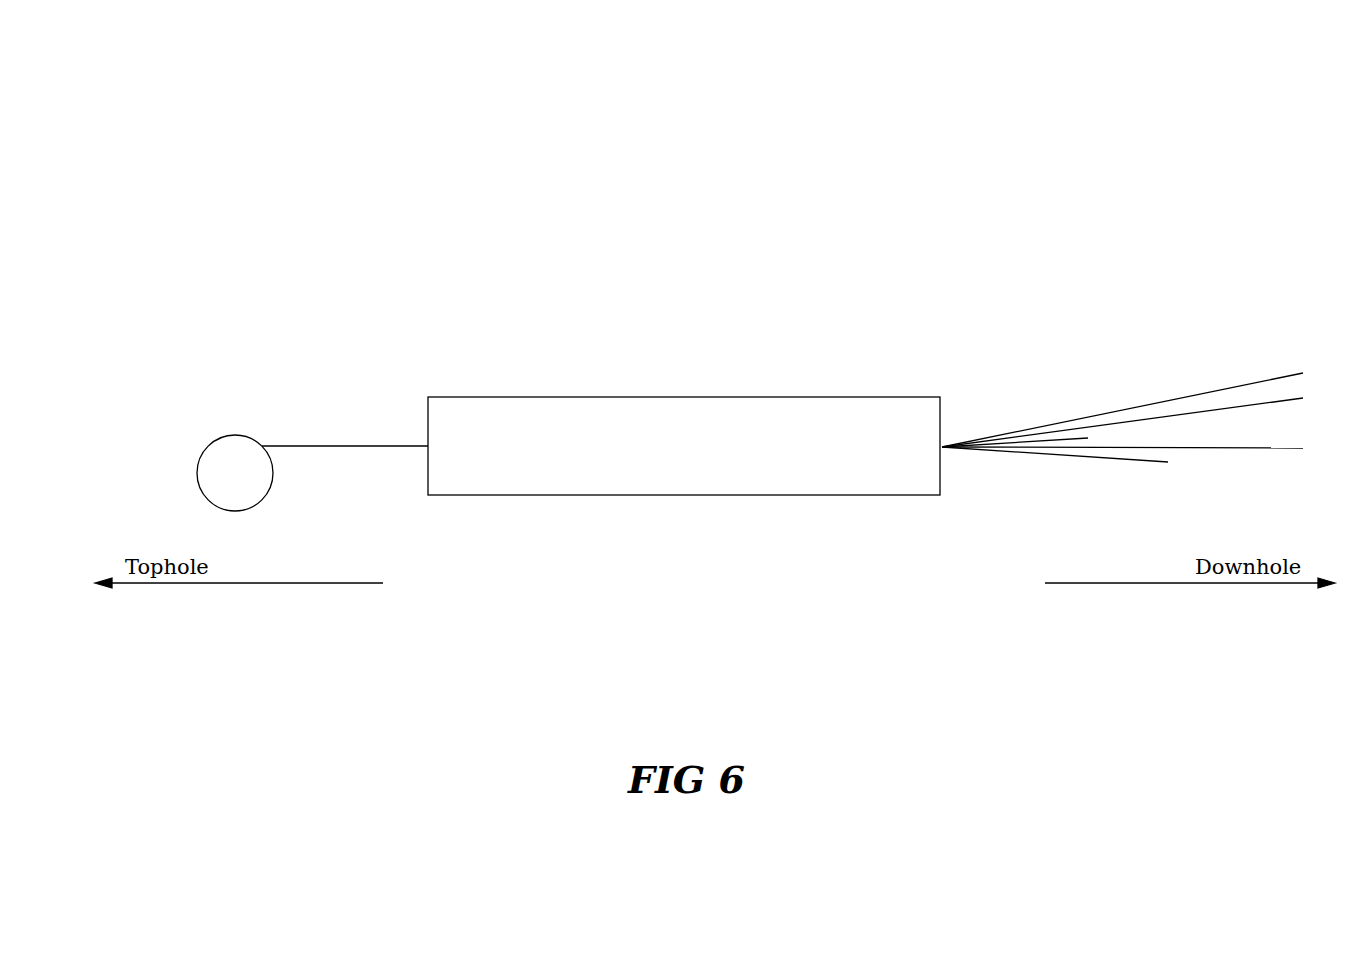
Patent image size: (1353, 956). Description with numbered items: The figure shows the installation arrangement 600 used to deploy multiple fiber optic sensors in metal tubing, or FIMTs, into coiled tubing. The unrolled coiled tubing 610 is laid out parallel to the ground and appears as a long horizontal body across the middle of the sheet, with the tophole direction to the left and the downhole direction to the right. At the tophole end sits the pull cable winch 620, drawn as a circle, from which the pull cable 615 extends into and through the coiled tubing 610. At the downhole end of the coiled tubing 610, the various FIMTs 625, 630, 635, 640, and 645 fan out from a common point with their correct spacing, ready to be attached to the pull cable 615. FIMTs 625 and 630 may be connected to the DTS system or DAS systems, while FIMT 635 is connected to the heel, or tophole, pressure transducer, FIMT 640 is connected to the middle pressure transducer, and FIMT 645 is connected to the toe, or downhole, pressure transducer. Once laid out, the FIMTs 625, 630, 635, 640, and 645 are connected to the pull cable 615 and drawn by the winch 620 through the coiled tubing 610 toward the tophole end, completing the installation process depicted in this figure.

The downhole tool system 600 is at (200, 155).
The unrolled coiled tubing 610 is at (596, 397).
The pull cable 615 is at (355, 443).
The pull cable winch 620 is at (223, 435).
The FIMT 625 is at (1253, 383).
The FIMT 630 is at (1178, 413).
The FIMT 635 is at (1062, 440).
The FIMT 640 is at (1123, 458).
The FIMT 645 is at (1233, 448).